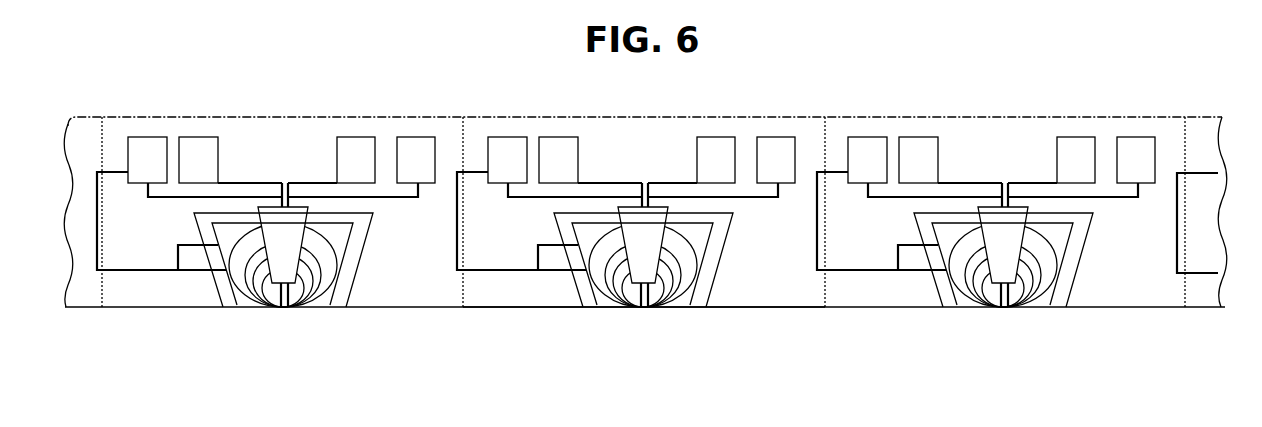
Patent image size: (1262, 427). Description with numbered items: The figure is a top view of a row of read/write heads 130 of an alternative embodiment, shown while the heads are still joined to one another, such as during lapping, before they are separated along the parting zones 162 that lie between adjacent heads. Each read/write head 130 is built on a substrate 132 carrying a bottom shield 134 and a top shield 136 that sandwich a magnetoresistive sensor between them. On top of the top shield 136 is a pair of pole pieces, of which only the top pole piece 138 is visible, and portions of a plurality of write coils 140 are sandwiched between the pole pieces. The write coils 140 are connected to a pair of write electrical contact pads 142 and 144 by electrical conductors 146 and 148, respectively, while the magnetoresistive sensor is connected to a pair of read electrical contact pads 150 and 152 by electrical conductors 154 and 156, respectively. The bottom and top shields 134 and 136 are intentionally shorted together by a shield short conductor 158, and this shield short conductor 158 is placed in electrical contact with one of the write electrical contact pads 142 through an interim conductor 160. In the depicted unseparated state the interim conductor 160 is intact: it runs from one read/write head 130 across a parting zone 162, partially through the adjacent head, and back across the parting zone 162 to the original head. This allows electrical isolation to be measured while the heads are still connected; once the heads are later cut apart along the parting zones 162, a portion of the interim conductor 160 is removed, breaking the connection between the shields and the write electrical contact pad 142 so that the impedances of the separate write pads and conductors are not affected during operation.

The read/write head 130 is at (80, 95).
The parting zone 162 is at (108, 126).
The substrate 132 is at (493, 295).
The bottom shield 134 is at (587, 295).
The top shield 136 is at (604, 293).
The top pole piece 138 is at (643, 260).
The write coils 140 is at (700, 233).
The write electrical contact pad 142 is at (496, 145).
The write electrical contact pad 144 is at (548, 145).
The electrical conductor 146 is at (622, 182).
The electrical conductor 148 is at (592, 182).
The read electrical contact pad 150 is at (727, 148).
The read electrical contact pad 152 is at (788, 148).
The electrical conductor 154 is at (687, 182).
The electrical conductor 156 is at (658, 196).
The shield short conductor 158 is at (528, 258).
The interim conductor 160 is at (471, 272).